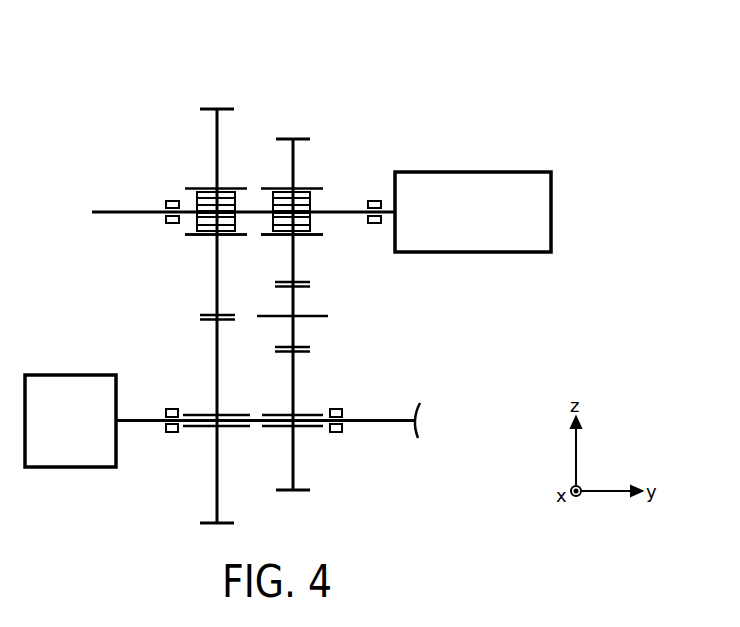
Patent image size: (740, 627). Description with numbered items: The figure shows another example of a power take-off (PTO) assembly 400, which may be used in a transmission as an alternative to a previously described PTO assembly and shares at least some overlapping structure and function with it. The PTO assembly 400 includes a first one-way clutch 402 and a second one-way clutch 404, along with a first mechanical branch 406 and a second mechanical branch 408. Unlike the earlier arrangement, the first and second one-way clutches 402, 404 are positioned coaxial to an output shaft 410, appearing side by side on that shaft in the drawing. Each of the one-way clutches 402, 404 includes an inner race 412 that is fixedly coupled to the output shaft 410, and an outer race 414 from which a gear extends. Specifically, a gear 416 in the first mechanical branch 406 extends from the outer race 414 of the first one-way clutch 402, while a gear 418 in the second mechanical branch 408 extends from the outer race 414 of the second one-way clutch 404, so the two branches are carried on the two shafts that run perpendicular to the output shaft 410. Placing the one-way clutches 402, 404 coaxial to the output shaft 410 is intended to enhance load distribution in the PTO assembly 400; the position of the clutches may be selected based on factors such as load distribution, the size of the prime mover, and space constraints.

The PTO assembly 400 is at (595, 139).
The first one-way clutch 402 is at (345, 178).
The second one-way clutch 404 is at (181, 194).
The first mechanical branch 406 is at (294, 125).
The second mechanical branch 408 is at (217, 94).
The output shaft 410 is at (105, 210).
The inner races 412 is at (198, 214).
The outer races 414 is at (198, 231).
The gear 416 is at (296, 264).
The gear 418 is at (216, 293).